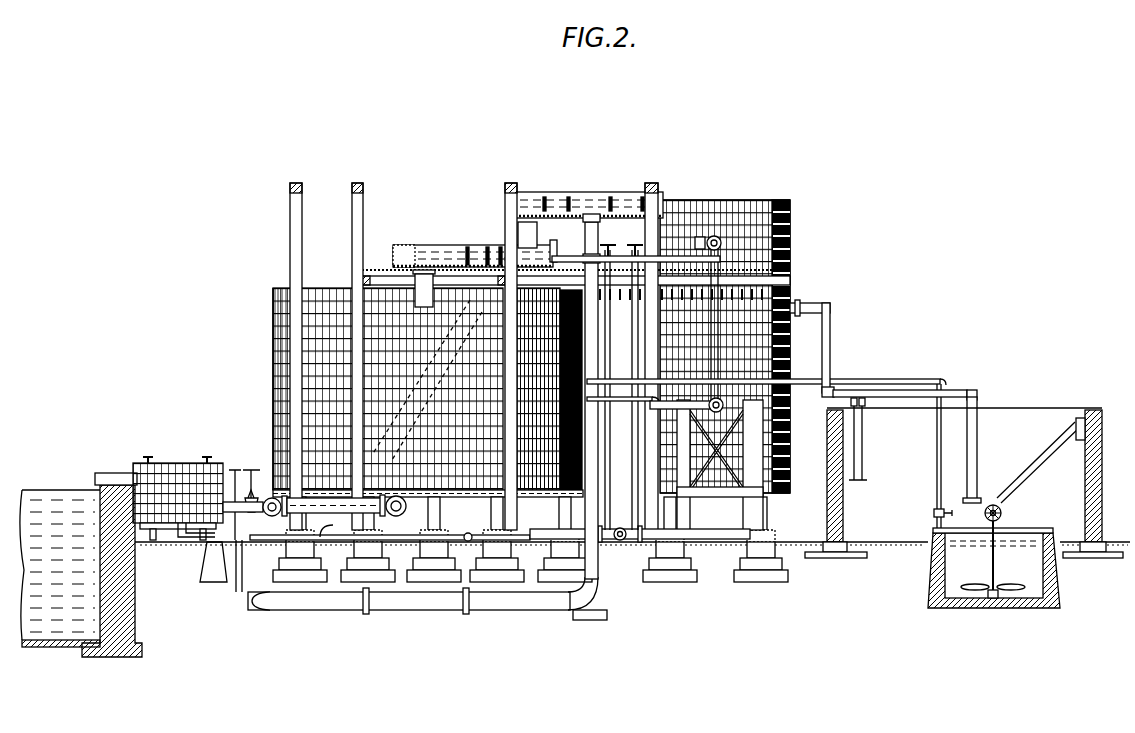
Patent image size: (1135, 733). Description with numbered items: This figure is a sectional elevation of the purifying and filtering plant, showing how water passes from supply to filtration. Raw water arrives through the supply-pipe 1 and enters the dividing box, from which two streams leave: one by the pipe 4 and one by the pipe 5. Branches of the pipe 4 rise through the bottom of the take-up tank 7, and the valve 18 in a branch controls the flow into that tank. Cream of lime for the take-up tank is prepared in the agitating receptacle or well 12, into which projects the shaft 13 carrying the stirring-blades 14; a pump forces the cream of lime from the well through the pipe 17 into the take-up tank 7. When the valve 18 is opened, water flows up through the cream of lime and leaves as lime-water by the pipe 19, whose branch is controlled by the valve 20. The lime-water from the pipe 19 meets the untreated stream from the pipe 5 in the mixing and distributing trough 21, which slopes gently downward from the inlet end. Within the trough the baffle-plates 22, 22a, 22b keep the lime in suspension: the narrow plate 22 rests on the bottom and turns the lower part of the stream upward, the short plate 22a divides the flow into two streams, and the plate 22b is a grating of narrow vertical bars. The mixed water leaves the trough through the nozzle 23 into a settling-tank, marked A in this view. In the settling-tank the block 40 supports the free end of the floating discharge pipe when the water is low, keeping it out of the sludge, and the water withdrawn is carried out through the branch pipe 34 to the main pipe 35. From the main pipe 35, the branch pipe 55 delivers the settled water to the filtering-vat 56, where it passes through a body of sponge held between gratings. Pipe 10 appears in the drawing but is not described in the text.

The tank A is at (272, 344).
The supply-pipe 1 is at (591, 220).
The discharge pipe 4 is at (632, 252).
The discharge pipe 5 is at (527, 235).
The take-up tank 7 is at (790, 243).
The pipe 10 is at (624, 379).
The receptacle 12 is at (994, 568).
The shaft 13 is at (991, 560).
The stirring-blades 14 is at (972, 584).
The pipe 17 is at (957, 392).
The valve 18 is at (724, 400).
The pipe 19 is at (566, 256).
The valve 20 is at (704, 238).
The mixing and distributing trough 21 is at (440, 247).
The baffle-plate 22 is at (501, 247).
The baffle-plate 22a is at (487, 248).
The baffle-plate 22b is at (467, 247).
The nozzle 23 is at (424, 288).
The branch pipe 34 is at (398, 514).
The main pipe 35 is at (300, 506).
The block 40 is at (877, 390).
The branch pipe 55 is at (249, 470).
The filtering-vat 56 is at (183, 456).